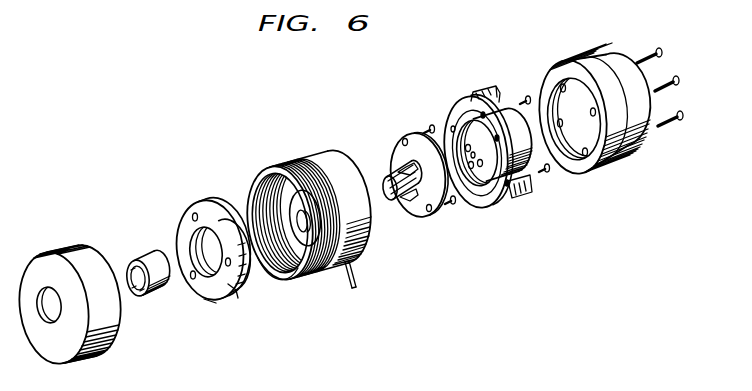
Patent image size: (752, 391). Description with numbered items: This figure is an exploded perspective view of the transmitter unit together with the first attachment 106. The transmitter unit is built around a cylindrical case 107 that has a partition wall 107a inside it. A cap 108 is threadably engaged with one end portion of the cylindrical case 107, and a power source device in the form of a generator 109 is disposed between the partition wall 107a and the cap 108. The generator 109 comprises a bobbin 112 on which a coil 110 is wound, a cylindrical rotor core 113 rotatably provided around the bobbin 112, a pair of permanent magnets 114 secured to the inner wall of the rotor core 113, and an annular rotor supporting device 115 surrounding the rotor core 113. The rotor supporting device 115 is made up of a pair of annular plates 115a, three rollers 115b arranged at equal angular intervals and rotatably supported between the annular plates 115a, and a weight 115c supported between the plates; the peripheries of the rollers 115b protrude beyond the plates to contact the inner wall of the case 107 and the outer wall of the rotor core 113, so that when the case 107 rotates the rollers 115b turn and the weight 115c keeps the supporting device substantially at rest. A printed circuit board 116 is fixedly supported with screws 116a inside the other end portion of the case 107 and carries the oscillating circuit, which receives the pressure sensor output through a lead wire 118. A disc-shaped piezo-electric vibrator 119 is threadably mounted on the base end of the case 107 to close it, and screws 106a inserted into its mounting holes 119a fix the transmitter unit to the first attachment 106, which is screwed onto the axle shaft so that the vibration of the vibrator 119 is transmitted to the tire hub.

The first attachment 106 is at (577, 61).
The screws 106a is at (644, 58).
The cylindrical case 107 is at (318, 152).
The partition wall 107a is at (302, 260).
The cap 108 is at (62, 250).
The power source device (generator) 109 is at (210, 308).
The coil 110 is at (387, 198).
The bobbin 112 is at (391, 178).
The rotor core 113 is at (137, 262).
The permanent magnets 114 is at (128, 268).
The rotor supporting device 115 is at (201, 241).
The annular plates 115a is at (231, 194).
The rollers 115b is at (203, 200).
The weight 115c is at (240, 296).
The printed circuit board 116 is at (423, 212).
The screws 116a is at (426, 131).
The lead wire 118 is at (355, 280).
The piezo-electric vibrator 119 is at (476, 97).
The mounting holes 119a is at (521, 101).